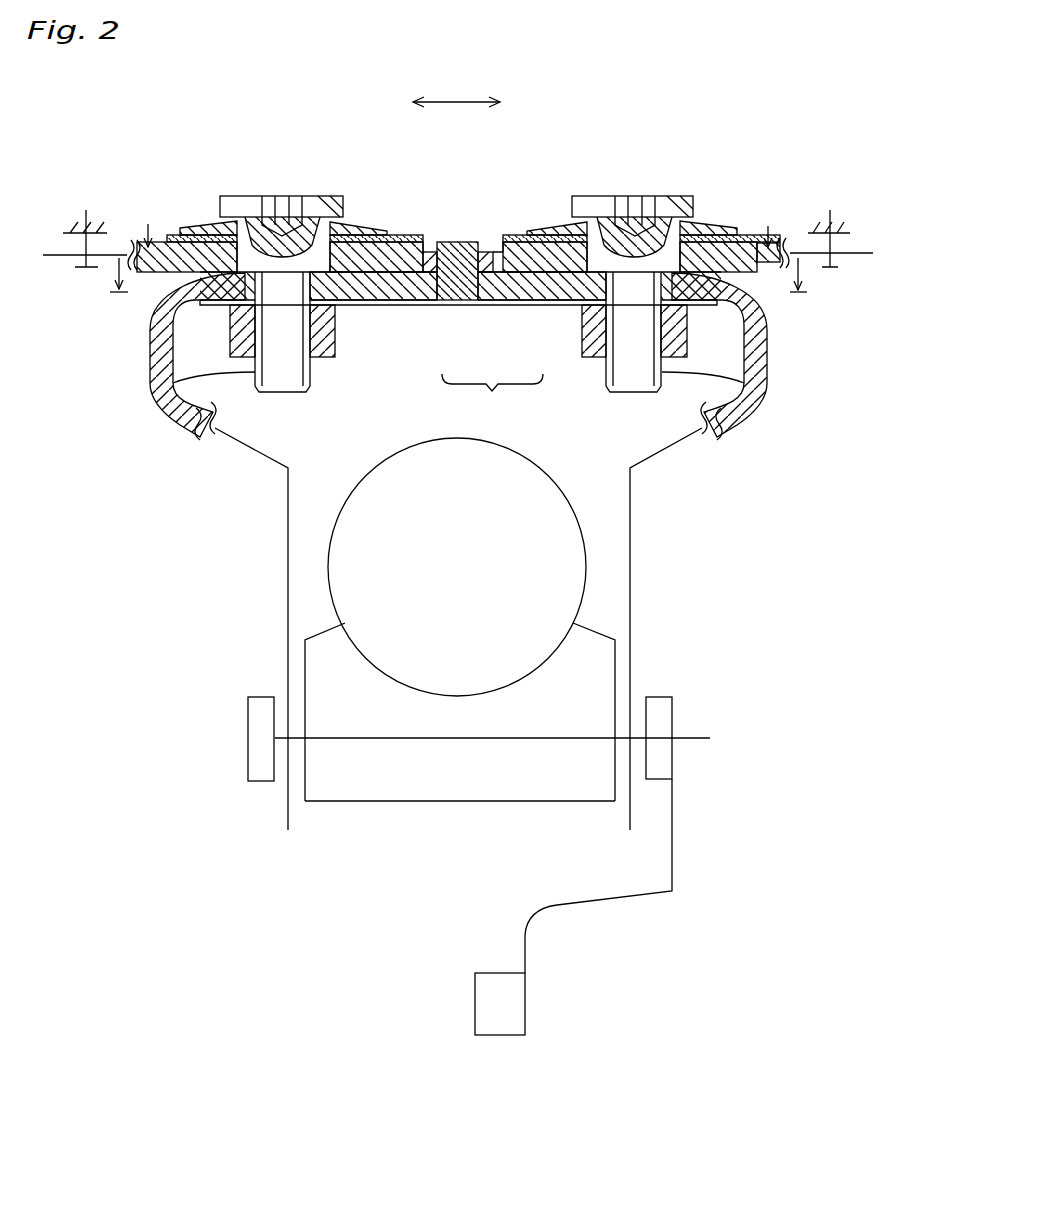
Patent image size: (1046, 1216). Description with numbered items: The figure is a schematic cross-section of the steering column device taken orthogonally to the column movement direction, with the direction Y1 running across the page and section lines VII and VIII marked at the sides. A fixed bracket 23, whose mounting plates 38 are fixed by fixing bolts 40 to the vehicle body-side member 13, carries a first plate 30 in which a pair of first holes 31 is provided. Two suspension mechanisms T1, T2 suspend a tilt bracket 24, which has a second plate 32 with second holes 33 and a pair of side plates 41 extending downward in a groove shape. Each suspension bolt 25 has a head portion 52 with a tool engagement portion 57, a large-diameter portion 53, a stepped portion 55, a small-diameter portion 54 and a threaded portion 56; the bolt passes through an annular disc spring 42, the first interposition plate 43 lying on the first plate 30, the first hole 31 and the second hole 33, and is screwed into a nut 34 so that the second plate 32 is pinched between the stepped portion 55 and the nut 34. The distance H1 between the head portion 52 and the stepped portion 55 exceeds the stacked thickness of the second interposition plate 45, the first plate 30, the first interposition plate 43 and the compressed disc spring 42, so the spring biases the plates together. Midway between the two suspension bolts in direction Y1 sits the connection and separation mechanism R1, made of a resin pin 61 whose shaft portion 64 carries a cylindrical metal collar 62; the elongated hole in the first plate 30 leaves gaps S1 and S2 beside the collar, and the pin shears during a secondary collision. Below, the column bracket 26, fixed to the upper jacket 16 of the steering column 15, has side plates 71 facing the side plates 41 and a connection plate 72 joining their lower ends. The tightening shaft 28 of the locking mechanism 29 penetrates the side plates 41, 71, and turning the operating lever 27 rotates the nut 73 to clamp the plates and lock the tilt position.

The direction orthogonal to the column movement direction Y1 is at (468, 99).
The suspension mechanism T1 is at (321, 194).
The suspension mechanism T2 is at (590, 192).
The gap S1 is at (424, 240).
The gap S2 is at (497, 250).
The distance H1 is at (196, 234).
The connection and separation mechanism R1 is at (492, 393).
The section line VII is at (459, 217).
The section line VIII is at (458, 275).
The vehicle body-side member 13 is at (95, 222).
The steering column 15 is at (355, 477).
The upper jacket 16 is at (559, 478).
The fixed bracket 23 is at (521, 238).
The tilt bracket 24 is at (286, 603).
The suspension bolt 25 is at (237, 194).
The column bracket 26 is at (400, 805).
The operating lever 27 is at (520, 1009).
The tightening shaft 28 is at (250, 759).
The locking mechanism 29 is at (705, 800).
The first plate 30 is at (542, 240).
The first hole 31 is at (343, 252).
The second plate 32 is at (400, 292).
The second hole 33 is at (318, 306).
The nut 34 is at (321, 358).
The mounting plate 38 is at (60, 255).
The fixing bolt 40 is at (80, 269).
The side plate 41 is at (288, 540).
The disc spring 42 is at (345, 228).
The first interposition plate 43 is at (410, 238).
The second interposition plate 45 is at (461, 303).
The head portion 52 is at (192, 227).
The large-diameter portion 53 is at (247, 226).
The small-diameter portion 54 is at (272, 328).
The stepped portion 55 is at (212, 302).
The threaded portion 56 is at (162, 390).
The tool engagement portion 57 is at (283, 205).
The resin pin 61 is at (463, 303).
The metal collar 62 is at (490, 303).
The shaft portion 64 is at (455, 238).
The side plate 71 is at (307, 706).
The connection plate 72 is at (488, 803).
The nut 73 is at (673, 711).